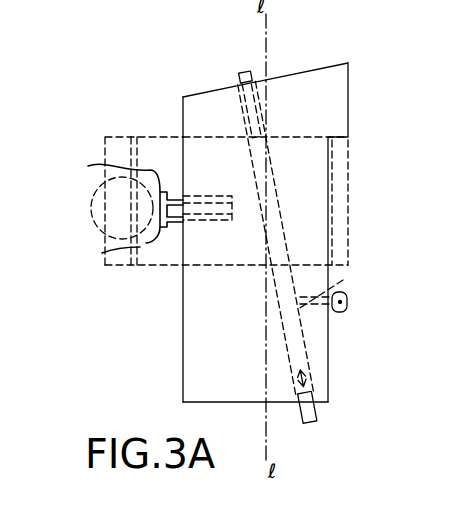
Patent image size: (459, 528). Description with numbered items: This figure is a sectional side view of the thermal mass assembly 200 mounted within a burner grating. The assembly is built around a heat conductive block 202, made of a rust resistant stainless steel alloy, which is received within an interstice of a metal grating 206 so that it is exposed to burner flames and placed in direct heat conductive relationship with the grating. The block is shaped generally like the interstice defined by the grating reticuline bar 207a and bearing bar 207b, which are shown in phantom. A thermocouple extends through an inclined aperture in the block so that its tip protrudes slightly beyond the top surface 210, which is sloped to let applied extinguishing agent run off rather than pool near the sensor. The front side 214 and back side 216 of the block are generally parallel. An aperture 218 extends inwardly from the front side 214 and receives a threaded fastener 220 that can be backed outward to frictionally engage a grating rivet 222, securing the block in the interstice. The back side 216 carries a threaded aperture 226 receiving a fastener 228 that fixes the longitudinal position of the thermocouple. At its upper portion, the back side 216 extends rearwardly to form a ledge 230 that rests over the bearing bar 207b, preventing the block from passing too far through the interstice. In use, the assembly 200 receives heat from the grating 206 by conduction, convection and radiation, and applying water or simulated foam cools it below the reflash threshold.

The thermal mass assembly 200 is at (150, 51).
The heat conductive block 202 is at (247, 377).
The metal grating 206 is at (134, 279).
The grating reticuline bar 207a is at (165, 137).
The grating bearing bar 207b is at (120, 137).
The top surface 210 is at (318, 68).
The front side 214 is at (182, 378).
The back side 216 is at (328, 366).
The aperture 218 is at (217, 223).
The fastener 220 is at (111, 199).
The rivet 222 is at (100, 250).
The threaded aperture 226 is at (343, 280).
The fastener 228 is at (348, 303).
The ledge 230 is at (336, 137).